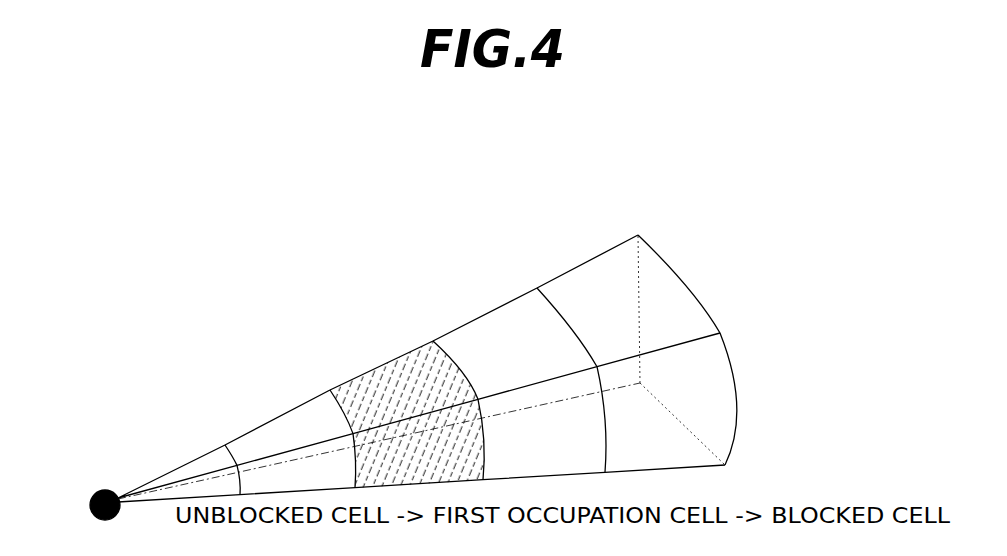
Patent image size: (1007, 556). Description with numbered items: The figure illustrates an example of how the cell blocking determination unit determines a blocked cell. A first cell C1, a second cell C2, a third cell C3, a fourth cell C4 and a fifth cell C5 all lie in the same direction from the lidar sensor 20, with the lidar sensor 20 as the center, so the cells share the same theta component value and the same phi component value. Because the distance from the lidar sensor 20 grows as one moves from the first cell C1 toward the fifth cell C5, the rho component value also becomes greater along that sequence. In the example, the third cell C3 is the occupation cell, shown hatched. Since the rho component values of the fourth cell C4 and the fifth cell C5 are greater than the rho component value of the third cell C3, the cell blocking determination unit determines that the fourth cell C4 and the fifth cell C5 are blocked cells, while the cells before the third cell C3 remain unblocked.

The lidar sensor 20 is at (98, 487).
The first cell C1 is at (182, 462).
The second cell C2 is at (265, 417).
The third cell C3 is at (370, 367).
The fourth cell C4 is at (480, 312).
The fifth cell C5 is at (580, 262).